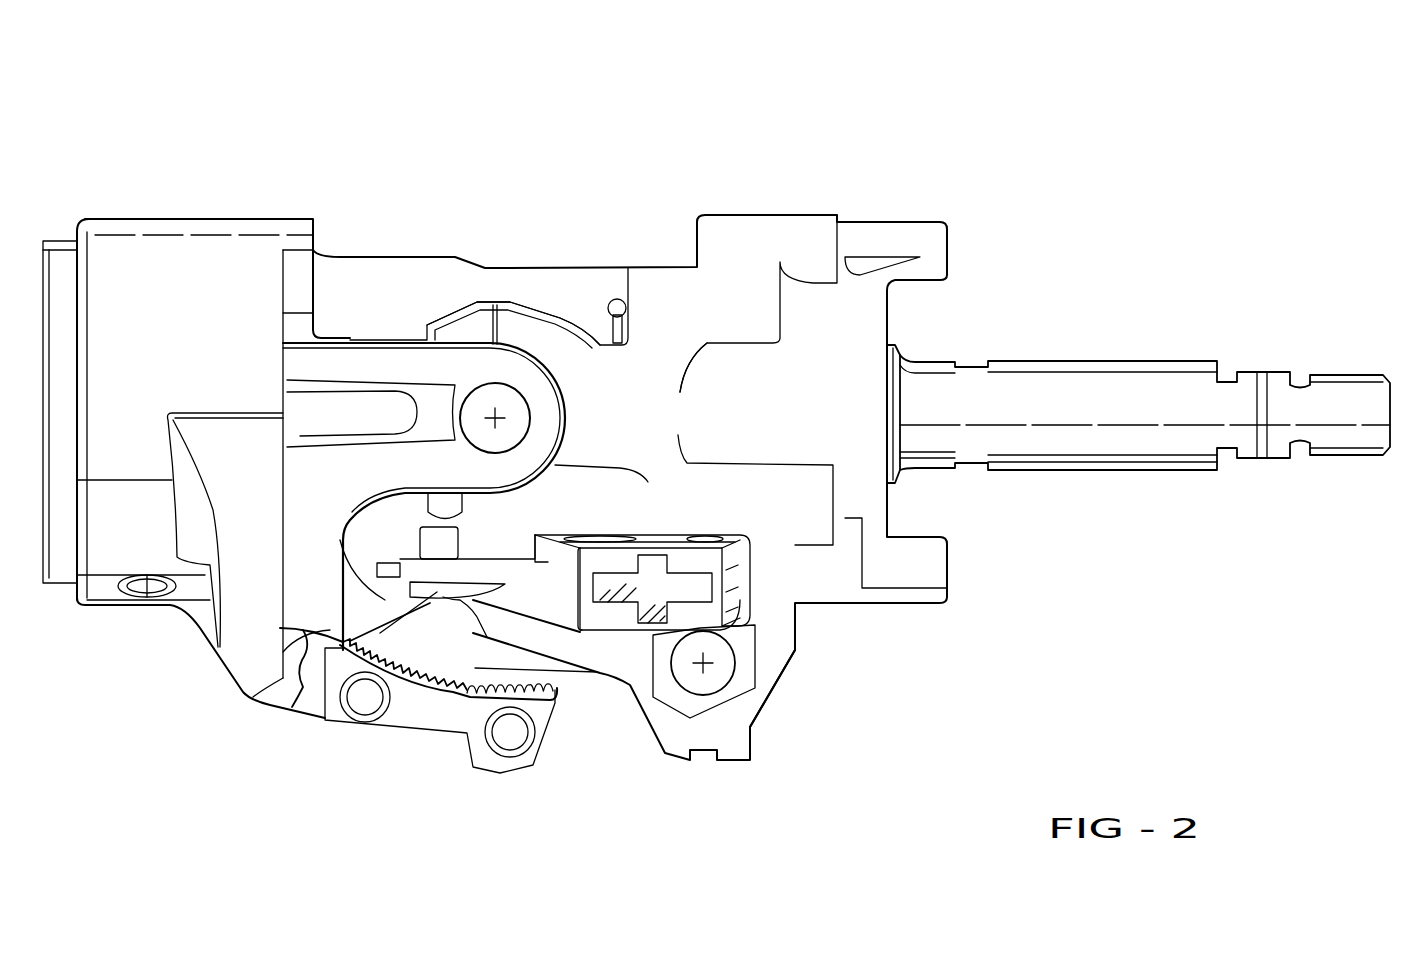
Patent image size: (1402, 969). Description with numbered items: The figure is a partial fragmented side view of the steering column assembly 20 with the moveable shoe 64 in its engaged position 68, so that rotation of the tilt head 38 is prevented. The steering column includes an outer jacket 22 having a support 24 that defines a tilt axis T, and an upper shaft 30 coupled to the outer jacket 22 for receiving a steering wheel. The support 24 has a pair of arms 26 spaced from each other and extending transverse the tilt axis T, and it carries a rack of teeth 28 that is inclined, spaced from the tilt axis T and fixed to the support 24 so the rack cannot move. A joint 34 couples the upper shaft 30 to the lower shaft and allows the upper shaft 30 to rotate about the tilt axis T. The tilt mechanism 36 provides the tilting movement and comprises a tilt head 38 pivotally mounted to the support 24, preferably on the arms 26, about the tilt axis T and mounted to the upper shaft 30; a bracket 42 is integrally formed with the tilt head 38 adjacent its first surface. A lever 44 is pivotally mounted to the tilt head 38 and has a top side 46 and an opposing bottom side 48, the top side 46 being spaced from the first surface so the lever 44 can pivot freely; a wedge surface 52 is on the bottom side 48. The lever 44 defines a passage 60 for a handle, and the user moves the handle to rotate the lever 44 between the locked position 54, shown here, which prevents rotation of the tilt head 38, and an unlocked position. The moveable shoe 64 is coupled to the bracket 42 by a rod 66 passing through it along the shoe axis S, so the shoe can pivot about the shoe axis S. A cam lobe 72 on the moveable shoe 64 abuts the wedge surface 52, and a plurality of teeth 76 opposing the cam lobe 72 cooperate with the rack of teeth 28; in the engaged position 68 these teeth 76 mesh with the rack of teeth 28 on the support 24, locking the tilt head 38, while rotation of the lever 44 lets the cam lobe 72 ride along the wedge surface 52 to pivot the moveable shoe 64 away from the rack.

The steering column assembly 20 is at (1012, 183).
The outer jacket 22 is at (60, 586).
The support 24 is at (297, 530).
The arms 26 is at (482, 357).
The rack of teeth 28 is at (412, 718).
The upper shaft 30 is at (1148, 360).
The joint 34 is at (525, 322).
The tilt mechanism 36 is at (280, 742).
The tilt head 38 is at (733, 212).
The bracket 42 is at (775, 660).
The lever 44 is at (702, 550).
The top side 46 is at (355, 548).
The bottom side 48 is at (385, 575).
The wedge surface 52 is at (412, 592).
The locked position 54 is at (830, 618).
The passage 60 is at (705, 580).
The moveable shoe 64 is at (318, 633).
The rod 66 is at (703, 690).
The engaged position 68 is at (563, 685).
The cam lobe 72 is at (338, 628).
The teeth 76 is at (440, 650).
The tilt axis T is at (502, 412).
The shoe axis S is at (708, 666).